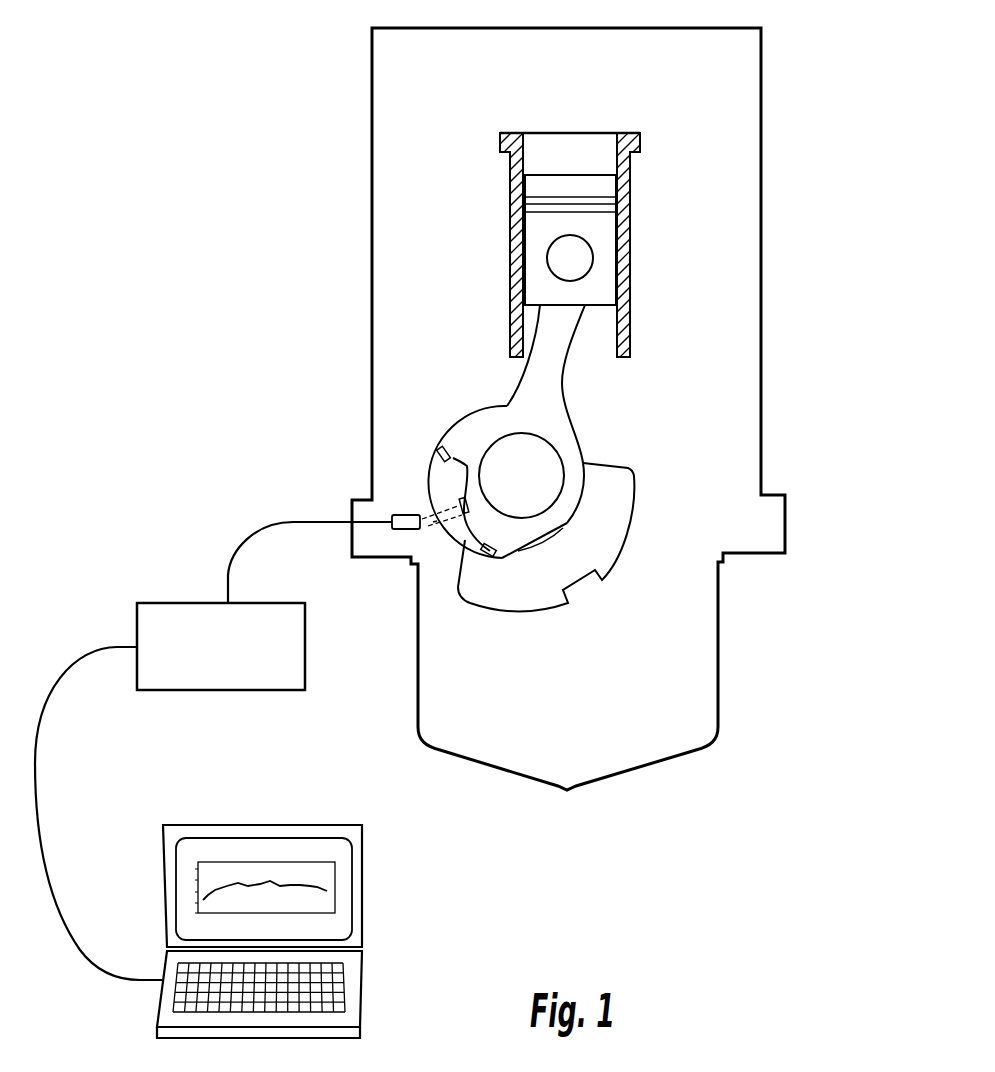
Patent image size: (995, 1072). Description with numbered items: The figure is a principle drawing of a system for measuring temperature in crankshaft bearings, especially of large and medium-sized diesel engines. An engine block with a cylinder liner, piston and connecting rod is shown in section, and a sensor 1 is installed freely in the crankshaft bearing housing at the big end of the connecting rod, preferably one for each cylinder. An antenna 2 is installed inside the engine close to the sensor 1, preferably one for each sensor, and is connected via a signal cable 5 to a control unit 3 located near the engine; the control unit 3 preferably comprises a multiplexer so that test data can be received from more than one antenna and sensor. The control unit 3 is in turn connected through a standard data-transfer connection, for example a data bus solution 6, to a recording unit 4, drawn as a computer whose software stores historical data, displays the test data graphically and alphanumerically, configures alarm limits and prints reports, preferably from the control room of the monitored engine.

The sensor 1 is at (452, 490).
The antenna 2 is at (397, 510).
The control unit 3 is at (170, 603).
The recording unit 4 is at (363, 965).
The signal cable 5 is at (265, 527).
The data bus solution 6 is at (38, 793).